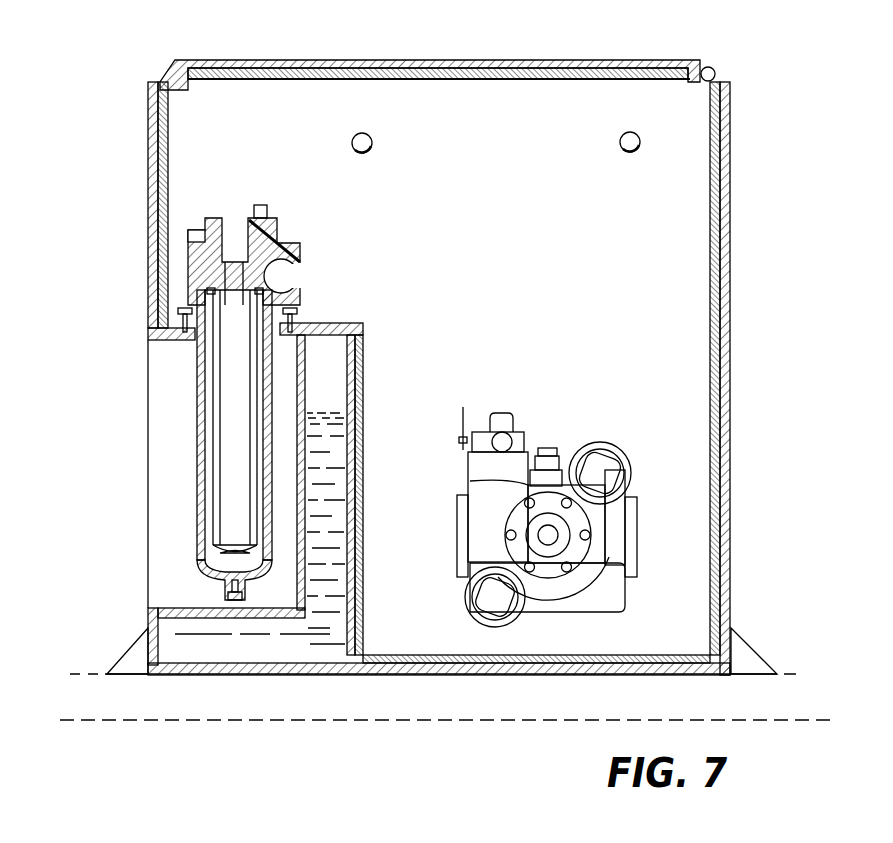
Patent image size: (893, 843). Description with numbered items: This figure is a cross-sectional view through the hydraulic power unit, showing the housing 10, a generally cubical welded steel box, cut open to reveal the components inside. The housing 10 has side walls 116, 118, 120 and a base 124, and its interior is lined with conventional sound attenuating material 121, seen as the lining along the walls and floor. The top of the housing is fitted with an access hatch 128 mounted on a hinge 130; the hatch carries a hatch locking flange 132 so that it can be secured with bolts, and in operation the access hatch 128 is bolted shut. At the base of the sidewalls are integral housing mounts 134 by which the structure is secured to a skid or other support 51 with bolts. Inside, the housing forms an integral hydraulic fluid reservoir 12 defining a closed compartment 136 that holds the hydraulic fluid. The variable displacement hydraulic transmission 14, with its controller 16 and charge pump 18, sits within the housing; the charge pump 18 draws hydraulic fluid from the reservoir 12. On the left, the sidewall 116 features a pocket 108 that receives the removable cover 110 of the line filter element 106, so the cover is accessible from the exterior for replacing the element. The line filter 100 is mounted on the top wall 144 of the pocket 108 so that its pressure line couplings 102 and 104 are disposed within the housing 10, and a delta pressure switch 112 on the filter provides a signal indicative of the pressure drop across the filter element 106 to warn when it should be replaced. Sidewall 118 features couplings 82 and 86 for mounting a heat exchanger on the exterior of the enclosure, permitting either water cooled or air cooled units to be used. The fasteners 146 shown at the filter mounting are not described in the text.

The housing 10 is at (446, 346).
The hydraulic fluid reservoir 12 is at (278, 494).
The variable displacement hydraulic transmission 14 is at (526, 502).
The controller 16 is at (498, 413).
The charge pump 18 is at (515, 544).
The support 51 is at (76, 672).
The coupling 82 is at (621, 150).
The coupling 86 is at (368, 152).
The line filter mechanism 100 is at (234, 379).
The pressure line connection 102 is at (233, 217).
The pressure line connection 104 is at (303, 276).
The filter element 106 is at (218, 464).
The pocket 108 is at (175, 598).
The removable cover 110 is at (197, 390).
The delta pressure switch 112 is at (268, 207).
The side wall 116 is at (149, 263).
The side wall 118 is at (631, 277).
The side wall 120 is at (731, 305).
The sound attenuating material 121 is at (149, 156).
The base 124 is at (397, 658).
The access hatch 128 is at (542, 62).
The hinge 130 is at (716, 70).
The hatch locking flange 132 is at (170, 72).
The housing mount 134 is at (137, 645).
The closed compartment 136 is at (319, 657).
The top wall 144 is at (172, 345).
The bolt 146 is at (180, 309).